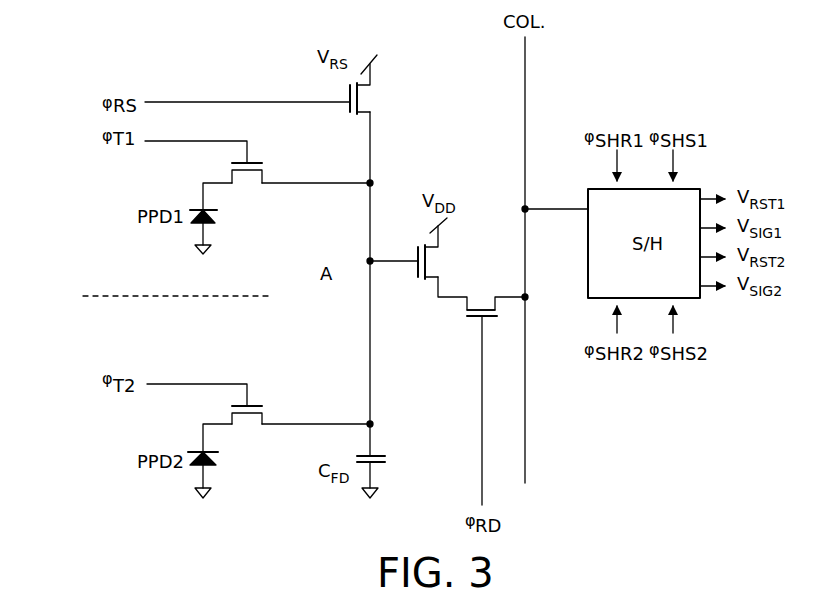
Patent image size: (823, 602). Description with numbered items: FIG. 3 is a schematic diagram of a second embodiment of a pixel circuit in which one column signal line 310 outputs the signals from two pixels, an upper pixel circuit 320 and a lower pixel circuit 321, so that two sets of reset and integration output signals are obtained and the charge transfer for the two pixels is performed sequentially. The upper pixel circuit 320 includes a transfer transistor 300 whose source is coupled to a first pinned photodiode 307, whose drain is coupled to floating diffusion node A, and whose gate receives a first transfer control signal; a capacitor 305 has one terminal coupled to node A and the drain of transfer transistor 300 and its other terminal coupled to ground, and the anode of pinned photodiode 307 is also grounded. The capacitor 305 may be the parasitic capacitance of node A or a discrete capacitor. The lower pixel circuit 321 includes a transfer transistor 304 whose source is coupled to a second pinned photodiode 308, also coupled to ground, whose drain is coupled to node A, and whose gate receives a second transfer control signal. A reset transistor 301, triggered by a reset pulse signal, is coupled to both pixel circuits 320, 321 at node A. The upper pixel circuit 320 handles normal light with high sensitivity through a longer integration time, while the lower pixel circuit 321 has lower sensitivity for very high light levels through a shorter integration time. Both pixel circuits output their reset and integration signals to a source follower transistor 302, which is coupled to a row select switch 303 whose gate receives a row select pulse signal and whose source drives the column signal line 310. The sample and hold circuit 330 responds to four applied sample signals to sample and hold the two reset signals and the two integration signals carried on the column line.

The transfer transistor 300 is at (250, 162).
The reset transistor 301 is at (340, 112).
The source follower transistor 302 is at (416, 258).
The row select switch 303 is at (477, 319).
The transfer transistor 304 is at (253, 405).
The capacitor 305 is at (375, 453).
The pinned photodiode PPD1 307 is at (217, 212).
The pinned photodiode PPD2 308 is at (213, 458).
The column signal line 310 is at (525, 68).
The upper pixel circuit 320 is at (118, 276).
The lower pixel circuit 321 is at (118, 329).
The sample and hold circuit 330 is at (588, 266).